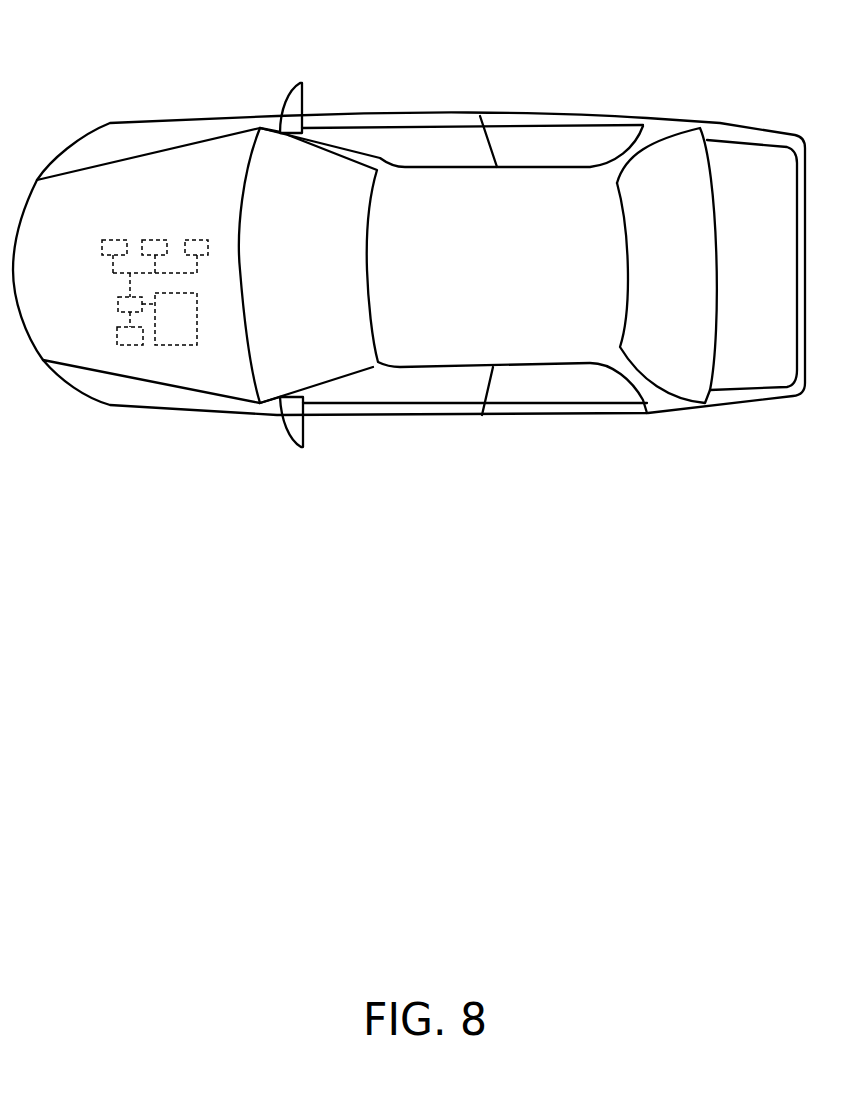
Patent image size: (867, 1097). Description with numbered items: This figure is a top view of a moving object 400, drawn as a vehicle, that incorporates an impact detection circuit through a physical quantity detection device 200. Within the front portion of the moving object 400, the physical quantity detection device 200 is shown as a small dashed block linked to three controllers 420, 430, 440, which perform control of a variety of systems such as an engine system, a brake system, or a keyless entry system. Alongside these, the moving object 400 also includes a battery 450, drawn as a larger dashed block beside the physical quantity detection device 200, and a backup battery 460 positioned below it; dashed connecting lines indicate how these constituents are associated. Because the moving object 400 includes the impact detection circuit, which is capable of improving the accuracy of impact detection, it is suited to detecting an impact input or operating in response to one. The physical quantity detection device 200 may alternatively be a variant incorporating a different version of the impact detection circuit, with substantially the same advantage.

The moving object 400 is at (431, 45).
The controller 420 is at (110, 239).
The controller 430 is at (152, 239).
The controller 440 is at (197, 239).
The physical quantity detection device 200 is at (118, 303).
The battery 450 is at (183, 345).
The backup battery 460 is at (117, 334).